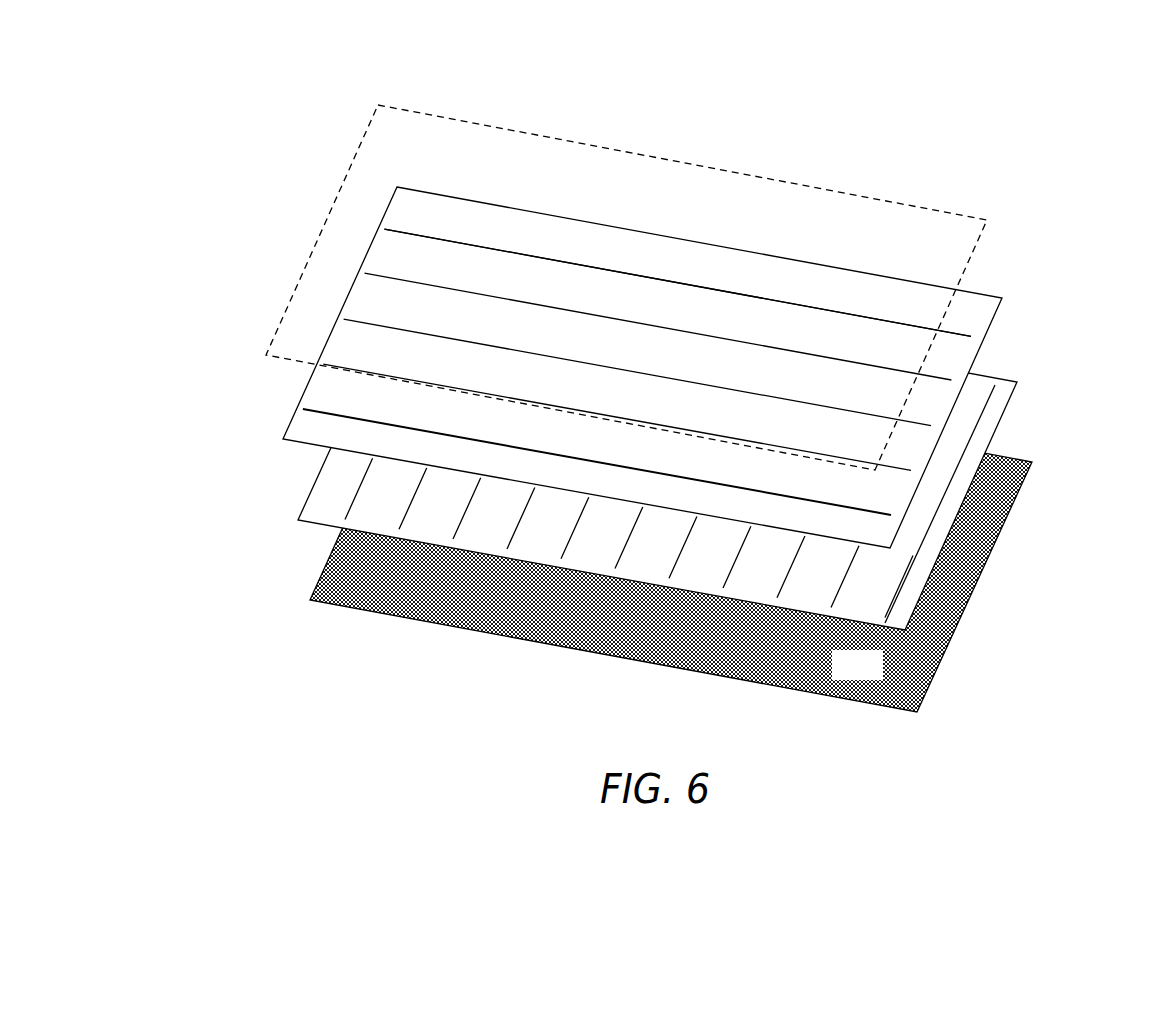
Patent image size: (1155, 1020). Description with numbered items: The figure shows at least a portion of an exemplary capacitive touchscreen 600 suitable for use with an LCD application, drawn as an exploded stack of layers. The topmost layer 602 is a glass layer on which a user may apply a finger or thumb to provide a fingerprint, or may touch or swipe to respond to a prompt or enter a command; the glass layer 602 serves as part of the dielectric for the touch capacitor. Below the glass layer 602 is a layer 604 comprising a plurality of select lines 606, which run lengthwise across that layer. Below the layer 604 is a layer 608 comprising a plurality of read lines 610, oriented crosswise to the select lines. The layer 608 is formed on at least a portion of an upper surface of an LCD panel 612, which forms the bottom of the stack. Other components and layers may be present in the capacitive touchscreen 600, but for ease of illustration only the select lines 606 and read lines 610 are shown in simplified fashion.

The capacitive touchscreen 600 is at (654, 396).
The topmost layer 602 is at (291, 296).
The layer 604 is at (601, 354).
The select lines 606 is at (883, 318).
The layer 608 is at (304, 496).
The read lines 610 is at (987, 407).
The LCD panel 612 is at (323, 581).